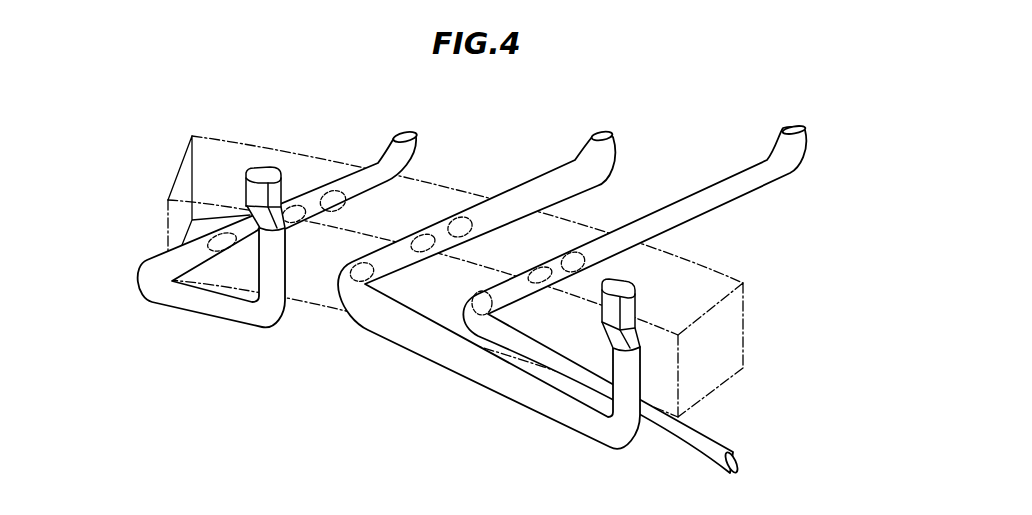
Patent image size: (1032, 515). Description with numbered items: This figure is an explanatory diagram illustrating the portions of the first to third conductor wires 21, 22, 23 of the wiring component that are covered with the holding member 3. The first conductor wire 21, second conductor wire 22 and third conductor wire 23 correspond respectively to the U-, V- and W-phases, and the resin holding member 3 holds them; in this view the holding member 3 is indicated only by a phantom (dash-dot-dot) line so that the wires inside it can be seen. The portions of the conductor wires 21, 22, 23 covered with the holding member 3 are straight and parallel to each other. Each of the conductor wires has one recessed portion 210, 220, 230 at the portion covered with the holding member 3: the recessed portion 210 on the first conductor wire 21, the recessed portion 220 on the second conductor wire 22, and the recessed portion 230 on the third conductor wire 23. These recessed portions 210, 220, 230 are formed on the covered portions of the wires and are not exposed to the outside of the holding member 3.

The holding member 3 is at (177, 173).
The first conductor wire 21 is at (773, 158).
The second conductor wire 22 is at (583, 155).
The third conductor wire 23 is at (393, 157).
The recessed portion 210 is at (523, 267).
The recessed portion 220 is at (407, 233).
The recessed portion 230 is at (290, 198).